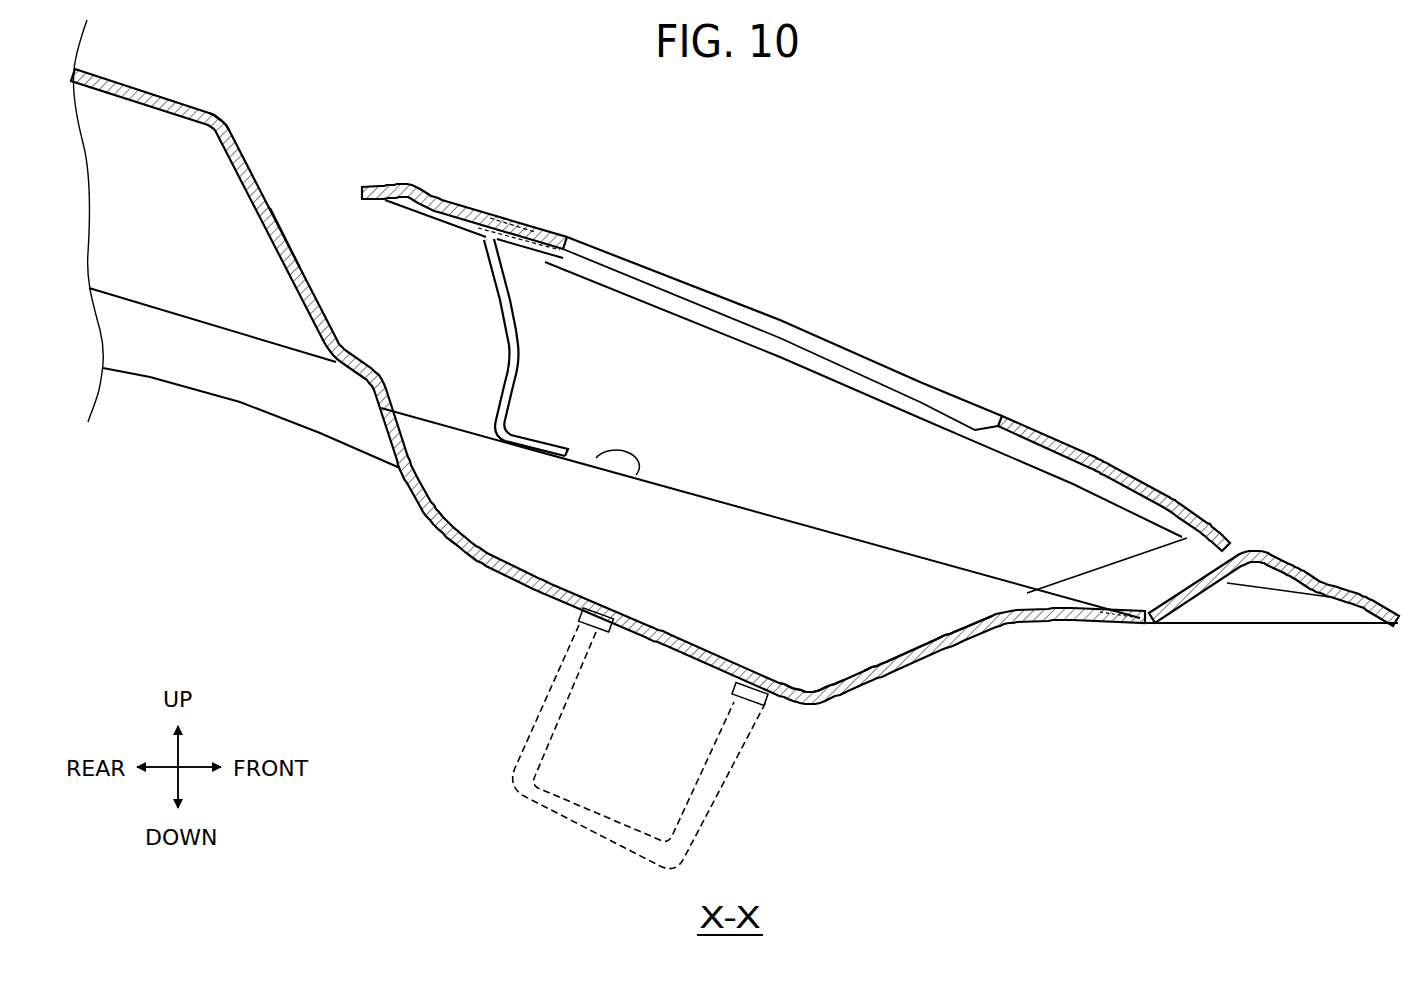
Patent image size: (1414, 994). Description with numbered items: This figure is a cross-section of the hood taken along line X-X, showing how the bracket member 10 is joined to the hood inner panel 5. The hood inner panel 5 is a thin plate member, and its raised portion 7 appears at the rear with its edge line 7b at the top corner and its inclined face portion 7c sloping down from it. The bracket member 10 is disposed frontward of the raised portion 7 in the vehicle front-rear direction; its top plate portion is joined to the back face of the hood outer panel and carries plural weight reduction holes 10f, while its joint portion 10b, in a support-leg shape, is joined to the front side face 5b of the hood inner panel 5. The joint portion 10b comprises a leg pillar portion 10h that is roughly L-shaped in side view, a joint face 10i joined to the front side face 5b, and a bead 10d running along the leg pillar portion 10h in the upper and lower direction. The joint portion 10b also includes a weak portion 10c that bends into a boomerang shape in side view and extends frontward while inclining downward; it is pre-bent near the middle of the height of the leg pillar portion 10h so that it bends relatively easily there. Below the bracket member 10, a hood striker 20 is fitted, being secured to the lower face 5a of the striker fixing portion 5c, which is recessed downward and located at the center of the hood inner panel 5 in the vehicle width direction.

The hood inner panel 5 is at (1367, 592).
The lower face 5a is at (786, 702).
The front side face 5b is at (633, 462).
The striker fixing portion 5c is at (920, 658).
The raised portion 7 is at (258, 176).
The edge line 7b is at (228, 112).
The inclined face portion 7c is at (290, 247).
The bracket member 10 is at (812, 401).
The joint portion 10b is at (550, 337).
The weak portion 10c is at (509, 363).
The bead 10d is at (514, 298).
The weight reduction hole 10f is at (963, 428).
The leg pillar portion 10h is at (523, 345).
The joint face 10i is at (558, 427).
The hood striker 20 is at (730, 788).